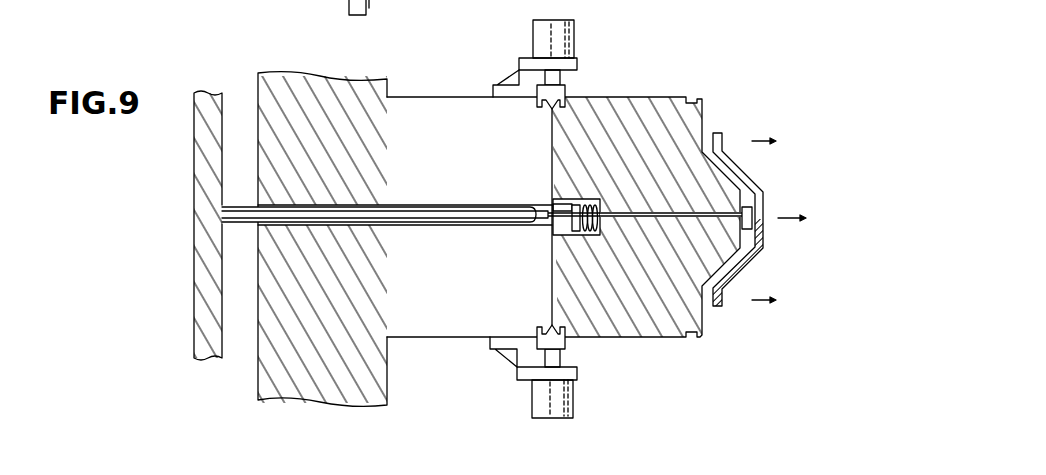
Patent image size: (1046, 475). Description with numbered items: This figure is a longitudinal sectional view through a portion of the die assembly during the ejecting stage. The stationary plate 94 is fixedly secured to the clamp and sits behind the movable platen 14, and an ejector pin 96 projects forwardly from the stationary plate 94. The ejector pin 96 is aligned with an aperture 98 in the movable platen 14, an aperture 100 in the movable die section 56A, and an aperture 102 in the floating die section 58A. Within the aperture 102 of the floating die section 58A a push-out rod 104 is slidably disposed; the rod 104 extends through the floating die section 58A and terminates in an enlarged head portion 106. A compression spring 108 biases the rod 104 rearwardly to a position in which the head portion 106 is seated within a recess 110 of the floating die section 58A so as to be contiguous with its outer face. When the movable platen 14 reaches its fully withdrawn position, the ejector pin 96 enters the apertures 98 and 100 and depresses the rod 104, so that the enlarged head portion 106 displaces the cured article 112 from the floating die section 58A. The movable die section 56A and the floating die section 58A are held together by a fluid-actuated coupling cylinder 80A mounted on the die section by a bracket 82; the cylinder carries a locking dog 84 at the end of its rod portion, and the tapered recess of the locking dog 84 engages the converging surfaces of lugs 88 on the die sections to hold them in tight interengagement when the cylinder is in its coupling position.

The movable platen 14 is at (268, 373).
The movable die section 56A is at (422, 97).
The floating die section 58A is at (665, 97).
The coupling cylinder 80A is at (574, 31).
The bracket 82 is at (578, 64).
The locking dog 84 is at (567, 89).
The lug 88 is at (552, 107).
The stationary plate 94 is at (202, 179).
The ejector pin 96 is at (465, 226).
The aperture 98 is at (350, 224).
The aperture 100 is at (445, 210).
The aperture 102 is at (590, 204).
The push-out rod 104 is at (673, 212).
The enlarged head portion 106 is at (760, 205).
The compression spring 108 is at (581, 236).
The recess 110 is at (761, 257).
The cured article 112 is at (749, 176).